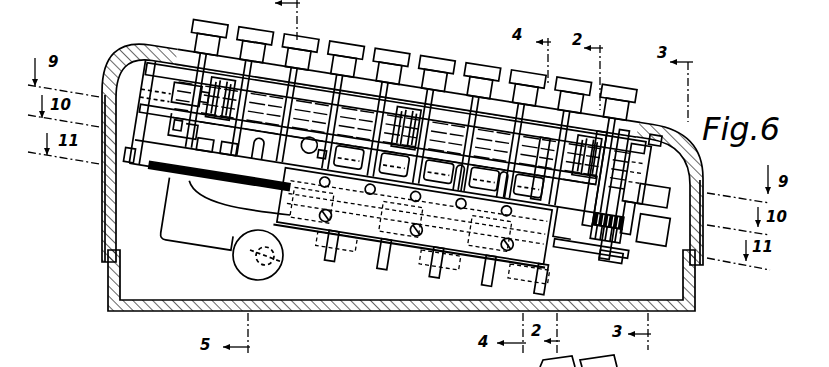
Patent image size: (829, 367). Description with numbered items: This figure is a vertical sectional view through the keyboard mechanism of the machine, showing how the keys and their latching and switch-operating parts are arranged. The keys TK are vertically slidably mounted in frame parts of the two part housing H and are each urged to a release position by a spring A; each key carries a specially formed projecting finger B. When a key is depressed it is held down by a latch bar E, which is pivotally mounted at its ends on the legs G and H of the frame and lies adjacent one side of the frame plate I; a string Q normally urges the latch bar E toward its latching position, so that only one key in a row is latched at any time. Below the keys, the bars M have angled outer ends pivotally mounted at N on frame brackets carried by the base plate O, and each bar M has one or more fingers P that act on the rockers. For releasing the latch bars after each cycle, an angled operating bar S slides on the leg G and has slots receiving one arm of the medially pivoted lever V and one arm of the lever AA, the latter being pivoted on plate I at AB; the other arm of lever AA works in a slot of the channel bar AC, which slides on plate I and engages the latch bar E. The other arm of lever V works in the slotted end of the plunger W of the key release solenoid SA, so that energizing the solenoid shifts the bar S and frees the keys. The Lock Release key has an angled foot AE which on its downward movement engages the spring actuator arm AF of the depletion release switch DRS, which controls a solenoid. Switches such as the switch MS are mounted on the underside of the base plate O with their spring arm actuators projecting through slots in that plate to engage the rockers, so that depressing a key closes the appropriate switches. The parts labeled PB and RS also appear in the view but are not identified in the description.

The tens key TK is at (471, 63).
The spring A is at (253, 112).
The latch bar E is at (186, 80).
The leg G is at (148, 79).
The angled operating bar S is at (160, 128).
The string Q is at (311, 137).
The projecting finger B is at (322, 154).
The bar M is at (416, 168).
The finger P is at (462, 163).
The frame plate I is at (541, 168).
The pivot N is at (320, 181).
The lever AA is at (202, 151).
The pivot AB is at (229, 152).
The channel bar AC is at (258, 142).
The lever V is at (166, 199).
The key release solenoid SA is at (244, 284).
The plunger W is at (279, 266).
The switch MS is at (490, 268).
The push bar PB is at (556, 186).
The rack segment RS is at (589, 223).
The leg H is at (651, 152).
The angled foot AE is at (654, 168).
The spring actuator arm AF is at (652, 205).
The depletion release switch DRS is at (646, 244).
The base plate O is at (610, 252).